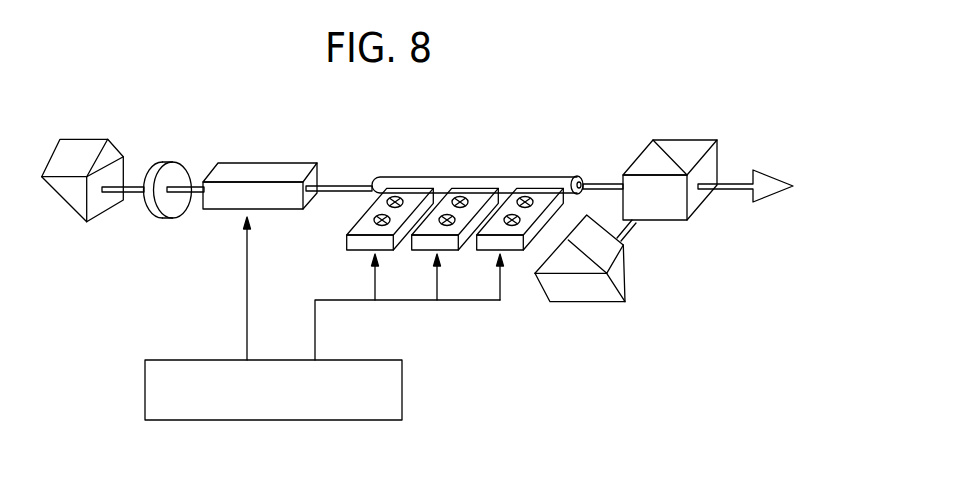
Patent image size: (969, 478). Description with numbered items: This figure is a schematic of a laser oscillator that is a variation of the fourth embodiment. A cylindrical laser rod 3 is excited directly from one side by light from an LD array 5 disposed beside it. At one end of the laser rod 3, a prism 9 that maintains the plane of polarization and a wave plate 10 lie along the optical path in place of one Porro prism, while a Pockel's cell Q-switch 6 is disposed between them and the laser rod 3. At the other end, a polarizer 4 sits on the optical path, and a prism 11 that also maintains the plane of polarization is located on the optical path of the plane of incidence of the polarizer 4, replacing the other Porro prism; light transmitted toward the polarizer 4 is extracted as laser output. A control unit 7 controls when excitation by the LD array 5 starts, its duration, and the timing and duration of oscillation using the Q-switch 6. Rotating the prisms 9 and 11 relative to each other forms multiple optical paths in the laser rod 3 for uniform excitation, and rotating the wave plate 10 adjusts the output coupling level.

The prism 9 is at (95, 138).
The wave plate 10 is at (167, 160).
The Q-switch 6 is at (275, 167).
The laser rod 3 is at (482, 177).
The LD array 5 is at (346, 233).
The polarizer 4 is at (675, 143).
The prism 11 is at (623, 272).
The control unit 7 is at (233, 423).